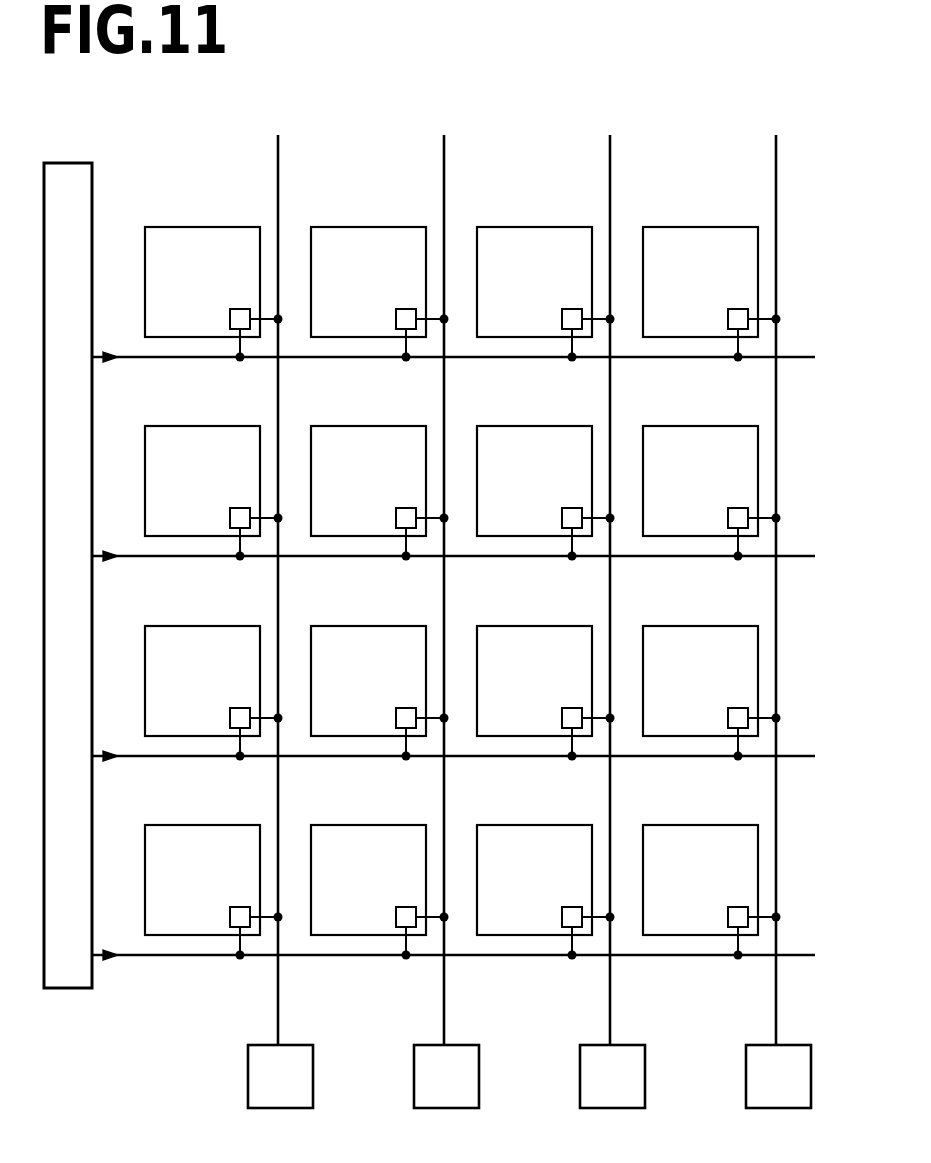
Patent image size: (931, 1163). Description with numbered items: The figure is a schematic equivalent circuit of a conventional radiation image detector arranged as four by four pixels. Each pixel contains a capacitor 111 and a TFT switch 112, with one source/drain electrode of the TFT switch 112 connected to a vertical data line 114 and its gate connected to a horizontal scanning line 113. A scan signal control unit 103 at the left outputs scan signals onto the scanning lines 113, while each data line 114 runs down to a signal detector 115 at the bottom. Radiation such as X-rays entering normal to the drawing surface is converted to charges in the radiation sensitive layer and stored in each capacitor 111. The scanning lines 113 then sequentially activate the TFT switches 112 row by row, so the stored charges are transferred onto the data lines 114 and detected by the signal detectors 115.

The scan signal control unit 103 is at (67, 162).
The capacitor 111 is at (695, 230).
The TFT switch 112 is at (742, 309).
The scanning line 113 is at (802, 353).
The data line 114 is at (277, 150).
The signal detector 115 is at (288, 1043).